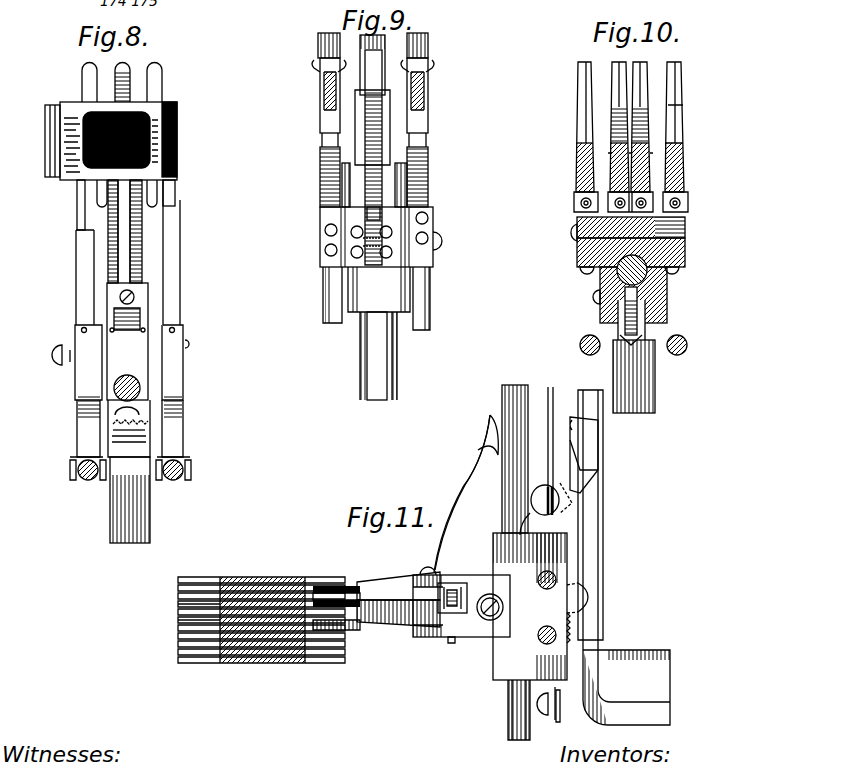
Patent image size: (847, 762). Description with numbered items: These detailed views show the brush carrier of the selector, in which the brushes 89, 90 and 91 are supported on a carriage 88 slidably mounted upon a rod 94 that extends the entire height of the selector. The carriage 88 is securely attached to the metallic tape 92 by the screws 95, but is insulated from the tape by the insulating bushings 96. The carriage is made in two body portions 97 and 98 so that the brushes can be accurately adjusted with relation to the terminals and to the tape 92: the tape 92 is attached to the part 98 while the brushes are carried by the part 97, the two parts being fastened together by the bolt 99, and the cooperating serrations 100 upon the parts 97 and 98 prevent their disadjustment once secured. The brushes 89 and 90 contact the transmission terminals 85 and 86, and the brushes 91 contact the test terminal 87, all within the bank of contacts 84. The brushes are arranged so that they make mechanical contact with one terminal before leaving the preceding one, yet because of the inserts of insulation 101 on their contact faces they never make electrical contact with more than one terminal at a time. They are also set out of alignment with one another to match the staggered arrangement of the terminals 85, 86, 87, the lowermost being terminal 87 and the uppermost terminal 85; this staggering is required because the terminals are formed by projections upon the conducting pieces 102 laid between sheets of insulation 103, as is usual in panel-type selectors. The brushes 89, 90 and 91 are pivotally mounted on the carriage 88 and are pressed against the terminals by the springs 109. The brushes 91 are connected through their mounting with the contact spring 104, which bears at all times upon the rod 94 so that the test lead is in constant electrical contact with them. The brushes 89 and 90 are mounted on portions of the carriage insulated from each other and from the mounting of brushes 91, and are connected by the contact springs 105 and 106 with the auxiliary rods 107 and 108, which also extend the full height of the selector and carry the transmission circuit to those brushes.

In FIG. 8, the bank of contacts 84 is at (133, 141).
In FIG. 11, the bank of contacts 84 is at (461, 612).
In FIG. 8, the transmission terminal 85 is at (88, 206).
In FIG. 9, the transmission terminal 85 is at (428, 242).
In FIG. 11, the transmission terminal 85 is at (182, 593).
In FIG. 8, the transmission terminal 86 is at (160, 212).
In FIG. 9, the transmission terminal 86 is at (325, 226).
In FIG. 11, the transmission terminal 86 is at (182, 609).
In FIG. 8, the test terminal 87 is at (135, 225).
In FIG. 9, the test terminal 87 is at (376, 272).
In FIG. 11, the test terminal 87 is at (182, 622).
In FIG. 8, the brush carrier 88 is at (141, 421).
In FIG. 10, the brush carrier 88 is at (645, 242).
In FIG. 11, the brush carrier 88 is at (499, 710).
In FIG. 8, the brush 89 is at (77, 258).
In FIG. 10, the brush 89 is at (580, 124).
In FIG. 11, the brush 89 is at (388, 585).
In FIG. 8, the brush 90 is at (172, 280).
In FIG. 10, the brush 90 is at (680, 118).
In FIG. 8, the brushes 91 is at (112, 262).
In FIG. 10, the brushes 91 is at (646, 128).
In FIG. 11, the brushes 91 is at (400, 620).
In FIG. 8, the metallic tape 92 is at (110, 433).
In FIG. 9, the metallic tape 92 is at (394, 378).
In FIG. 11, the metallic tape 92 is at (553, 398).
In FIG. 8, the rod 94 is at (130, 500).
In FIG. 9, the rod 94 is at (368, 378).
In FIG. 10, the rod 94 is at (578, 258).
In FIG. 11, the rod 94 is at (512, 712).
In FIG. 11, the screws 95 is at (535, 500).
In FIG. 8, the insulating bushings 96 is at (140, 437).
In FIG. 9, the insulating bushings 96 is at (362, 325).
In FIG. 11, the insulating bushings 96 is at (575, 505).
In FIG. 11, the body portion 97 is at (530, 532).
In FIG. 11, the body portion 98 is at (558, 703).
In FIG. 10, the bolt 99 is at (650, 350).
In FIG. 11, the bolt 99 is at (588, 596).
In FIG. 11, the serrations 100 is at (572, 632).
In FIG. 9, the inserts of insulation 101 is at (325, 250).
In FIG. 11, the inserts of insulation 101 is at (350, 600).
In FIG. 8, the conducting pieces 102 is at (90, 110).
In FIG. 8, the sheets of insulation 103 is at (48, 127).
In FIG. 8, the contact spring 104 is at (132, 372).
In FIG. 9, the contact spring 104 is at (370, 160).
In FIG. 10, the contact spring 104 is at (632, 270).
In FIG. 11, the contact spring 104 is at (476, 480).
In FIG. 8, the contact spring 105 is at (82, 418).
In FIG. 9, the contact spring 105 is at (428, 182).
In FIG. 10, the contact spring 105 is at (582, 272).
In FIG. 9, the contact spring 106 is at (322, 118).
In FIG. 10, the contact spring 106 is at (682, 270).
In FIG. 11, the contact spring 106 is at (590, 448).
In FIG. 8, the auxiliary rod 107 is at (85, 482).
In FIG. 9, the auxiliary rod 107 is at (428, 48).
In FIG. 10, the auxiliary rod 107 is at (582, 338).
In FIG. 8, the auxiliary rod 108 is at (175, 482).
In FIG. 9, the auxiliary rod 108 is at (320, 48).
In FIG. 10, the auxiliary rod 108 is at (684, 337).
In FIG. 11, the auxiliary rod 108 is at (600, 492).
In FIG. 10, the springs 109 is at (574, 198).
In FIG. 11, the springs 109 is at (460, 612).